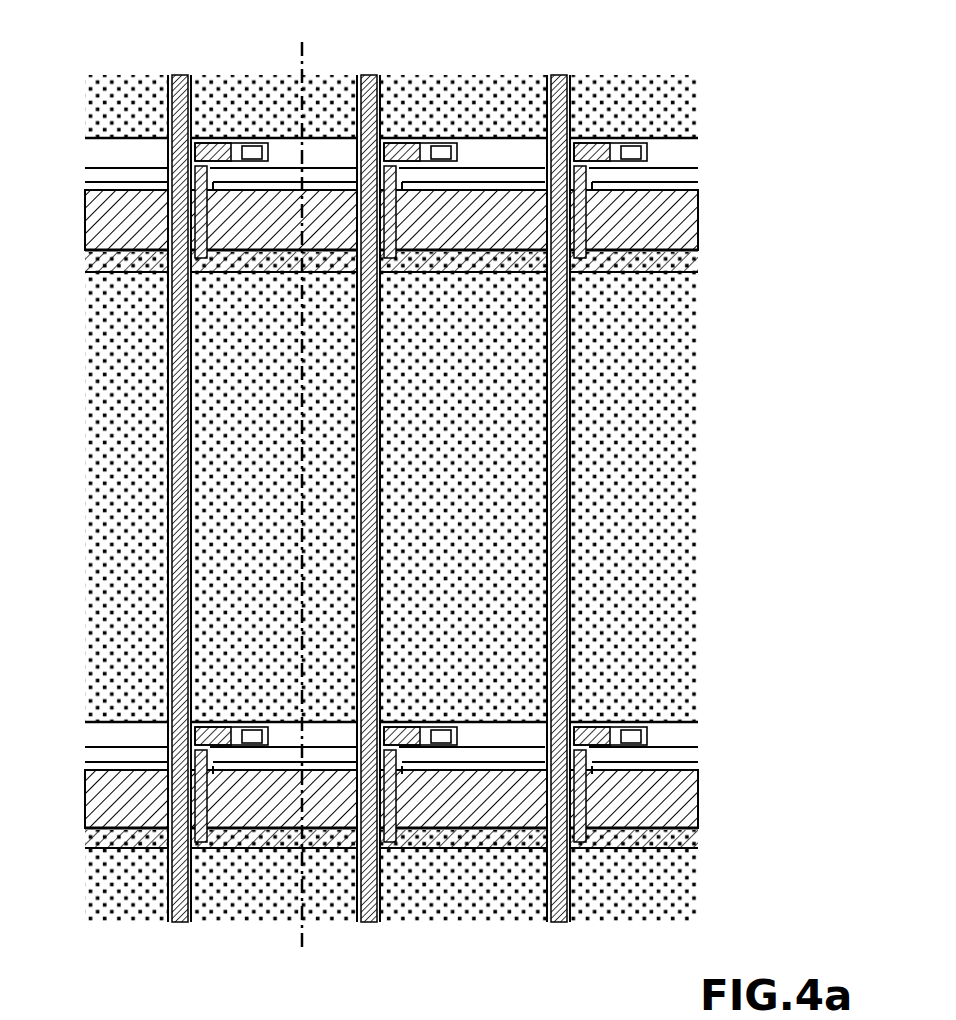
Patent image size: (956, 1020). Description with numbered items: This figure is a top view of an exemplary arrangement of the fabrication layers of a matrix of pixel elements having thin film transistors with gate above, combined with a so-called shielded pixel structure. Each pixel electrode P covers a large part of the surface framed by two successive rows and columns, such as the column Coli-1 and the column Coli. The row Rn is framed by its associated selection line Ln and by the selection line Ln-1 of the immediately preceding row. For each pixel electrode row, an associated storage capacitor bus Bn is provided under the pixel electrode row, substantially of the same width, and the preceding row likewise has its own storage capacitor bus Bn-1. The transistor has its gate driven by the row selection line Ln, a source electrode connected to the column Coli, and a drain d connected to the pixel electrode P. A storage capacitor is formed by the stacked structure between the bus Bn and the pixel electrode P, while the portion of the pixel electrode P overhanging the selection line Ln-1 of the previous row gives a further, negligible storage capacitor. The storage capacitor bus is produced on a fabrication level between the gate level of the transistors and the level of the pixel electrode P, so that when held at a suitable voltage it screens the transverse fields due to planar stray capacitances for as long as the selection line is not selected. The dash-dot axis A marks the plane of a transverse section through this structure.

The storage capacitor bus Bn-1 is at (700, 140).
The selection line of the immediately preceding row Ln-1 is at (716, 192).
The storage capacitor bus Bn is at (762, 255).
The row Rn is at (474, 396).
The pixel electrode P is at (676, 737).
The drain d is at (605, 756).
The row selection line Ln is at (418, 809).
The column Coli-1 is at (167, 924).
The column Coli is at (358, 924).
The axis AA' A is at (297, 501).